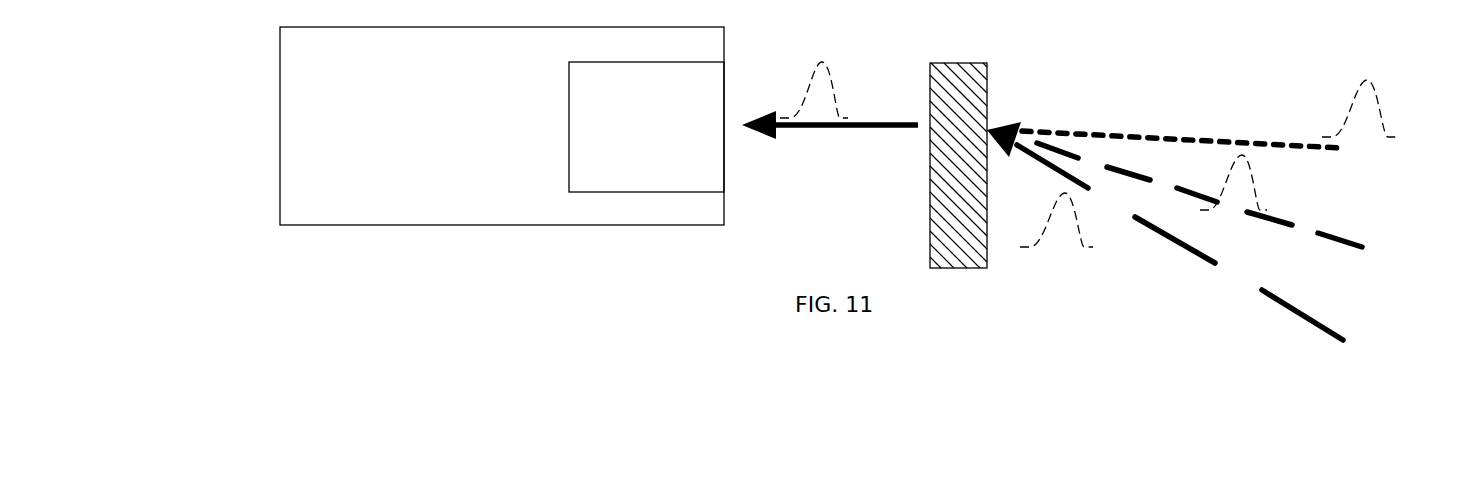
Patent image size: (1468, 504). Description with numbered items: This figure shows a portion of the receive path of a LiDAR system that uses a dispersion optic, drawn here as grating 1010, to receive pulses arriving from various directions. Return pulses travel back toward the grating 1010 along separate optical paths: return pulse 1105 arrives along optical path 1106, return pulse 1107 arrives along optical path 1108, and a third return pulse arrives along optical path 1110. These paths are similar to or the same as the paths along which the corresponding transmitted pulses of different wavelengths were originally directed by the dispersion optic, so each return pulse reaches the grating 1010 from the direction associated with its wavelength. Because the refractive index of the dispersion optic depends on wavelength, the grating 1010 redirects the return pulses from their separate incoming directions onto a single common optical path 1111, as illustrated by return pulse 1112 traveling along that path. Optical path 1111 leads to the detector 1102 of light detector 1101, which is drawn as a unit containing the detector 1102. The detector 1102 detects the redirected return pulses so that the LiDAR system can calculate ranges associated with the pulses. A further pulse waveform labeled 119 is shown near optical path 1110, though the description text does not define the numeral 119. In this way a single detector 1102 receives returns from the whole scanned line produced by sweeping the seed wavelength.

The light detector 1101 is at (502, 126).
The detector 1102 is at (675, 152).
The optical path 1111 is at (815, 132).
The return pulse 1112 is at (814, 75).
The grating 1010 is at (958, 139).
The optical path 1106 is at (1181, 126).
The return pulse 1105 is at (1377, 108).
The return pulse 1107 is at (1262, 182).
The optical path 1108 is at (1221, 195).
The optical path 1110 is at (1165, 237).
The third pulse 119 is at (1056, 234).